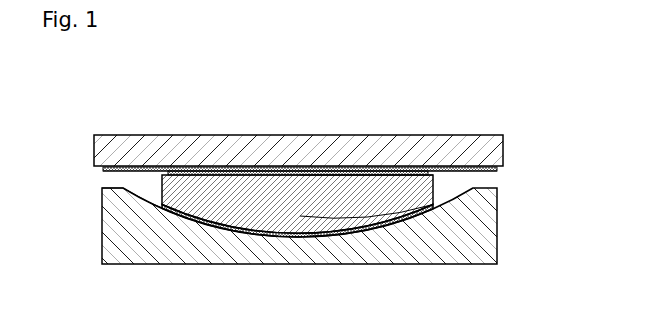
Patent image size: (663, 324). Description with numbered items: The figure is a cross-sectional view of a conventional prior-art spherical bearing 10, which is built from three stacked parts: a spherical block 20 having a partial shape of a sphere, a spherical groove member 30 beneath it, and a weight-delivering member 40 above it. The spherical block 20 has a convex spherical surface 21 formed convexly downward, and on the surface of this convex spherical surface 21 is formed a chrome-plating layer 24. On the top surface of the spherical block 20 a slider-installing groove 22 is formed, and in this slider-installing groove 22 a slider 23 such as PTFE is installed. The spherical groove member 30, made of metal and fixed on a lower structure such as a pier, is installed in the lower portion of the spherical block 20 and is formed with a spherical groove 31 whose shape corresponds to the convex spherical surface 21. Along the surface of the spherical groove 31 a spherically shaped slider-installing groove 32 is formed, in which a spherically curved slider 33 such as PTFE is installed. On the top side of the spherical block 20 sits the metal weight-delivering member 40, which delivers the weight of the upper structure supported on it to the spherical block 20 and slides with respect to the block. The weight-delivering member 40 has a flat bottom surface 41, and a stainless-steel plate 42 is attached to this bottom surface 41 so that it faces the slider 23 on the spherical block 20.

The spherical bearing 10 is at (436, 107).
The spherical block 20 is at (231, 192).
The convex spherical surface 21 is at (348, 235).
The slider-installing groove 22 is at (345, 177).
The slider 23 is at (300, 170).
The chrome-plating layer 24 is at (355, 242).
The spherical groove member 30 is at (476, 243).
The spherical groove 31 is at (126, 190).
The slider-installing groove 32 is at (214, 222).
The slider 33 is at (270, 232).
The weight-delivering member 40 is at (483, 147).
The flat bottom surface 41 is at (106, 174).
The stainless-steel plate 42 is at (140, 167).